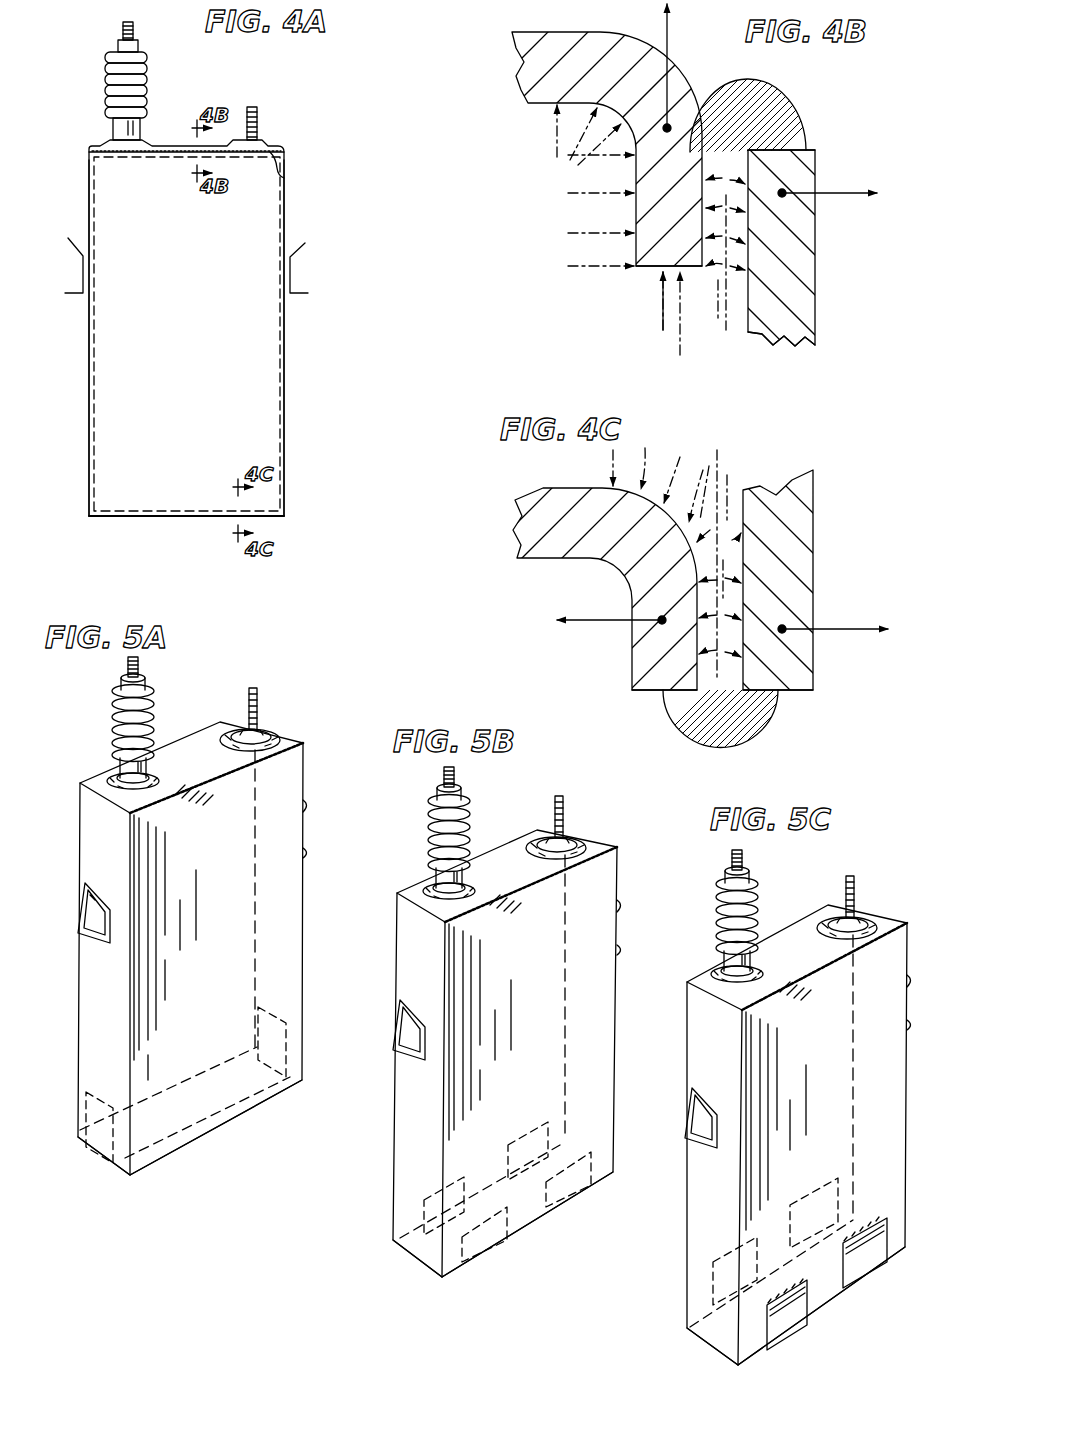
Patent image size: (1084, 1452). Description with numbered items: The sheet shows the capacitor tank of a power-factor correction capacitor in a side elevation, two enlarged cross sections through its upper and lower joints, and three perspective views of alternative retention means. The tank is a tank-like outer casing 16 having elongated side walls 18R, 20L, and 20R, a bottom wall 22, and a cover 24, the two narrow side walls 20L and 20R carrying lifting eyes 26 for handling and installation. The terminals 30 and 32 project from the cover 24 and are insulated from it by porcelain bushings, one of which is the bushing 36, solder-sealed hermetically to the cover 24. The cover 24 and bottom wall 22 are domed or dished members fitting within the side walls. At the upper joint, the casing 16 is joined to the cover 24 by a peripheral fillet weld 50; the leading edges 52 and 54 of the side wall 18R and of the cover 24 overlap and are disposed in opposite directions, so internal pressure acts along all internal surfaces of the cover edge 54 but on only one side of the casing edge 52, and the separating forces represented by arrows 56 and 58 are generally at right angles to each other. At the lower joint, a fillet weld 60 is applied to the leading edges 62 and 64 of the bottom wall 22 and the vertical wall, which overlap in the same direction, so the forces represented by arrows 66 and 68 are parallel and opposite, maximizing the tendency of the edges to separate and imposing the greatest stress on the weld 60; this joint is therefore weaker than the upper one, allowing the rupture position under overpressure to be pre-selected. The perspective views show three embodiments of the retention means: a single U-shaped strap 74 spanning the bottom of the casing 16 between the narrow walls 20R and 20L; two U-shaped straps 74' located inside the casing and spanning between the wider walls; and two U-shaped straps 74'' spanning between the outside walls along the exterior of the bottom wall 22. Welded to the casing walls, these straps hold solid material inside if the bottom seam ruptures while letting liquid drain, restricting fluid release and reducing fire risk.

In FIG. 4A, the outer casing 16 is at (272, 384).
In FIG. 4B, the outer casing 16 is at (781, 333).
In FIG. 4A, the side wall 18R is at (201, 297).
In FIG. 4B, the side wall 18R is at (805, 293).
In FIG. 4C, the side wall 18R is at (805, 560).
In FIG. 5A, the side wall 18R is at (236, 937).
In FIG. 5B, the side wall 18R is at (546, 1011).
In FIG. 5C, the side wall 18R is at (839, 1119).
In FIG. 4A, the side wall 20L is at (90, 468).
In FIG. 5A, the side wall 20L is at (122, 1032).
In FIG. 5B, the side wall 20L is at (435, 1131).
In FIG. 5C, the side wall 20L is at (712, 1173).
In FIG. 4A, the side wall 20R is at (282, 448).
In FIG. 4A, the bottom wall 22 is at (165, 520).
In FIG. 4C, the bottom wall 22 is at (546, 558).
In FIG. 5A, the bottom wall 22 is at (178, 1148).
In FIG. 5B, the bottom wall 22 is at (425, 1270).
In FIG. 5C, the bottom wall 22 is at (715, 1345).
In FIG. 4A, the cover 24 is at (275, 147).
In FIG. 4B, the cover 24 is at (534, 102).
In FIG. 5A, the cover 24 is at (203, 748).
In FIG. 5B, the cover 24 is at (510, 850).
In FIG. 5C, the cover 24 is at (795, 933).
In FIG. 4A, the lifting eyes 26 is at (68, 255).
In FIG. 5A, the lifting eyes 26 is at (85, 940).
In FIG. 5B, the lifting eyes 26 is at (398, 1040).
In FIG. 5C, the lifting eyes 26 is at (693, 1128).
In FIG. 4A, the terminal 30 is at (258, 110).
In FIG. 5A, the terminal 30 is at (260, 695).
In FIG. 5B, the terminal 30 is at (568, 800).
In FIG. 5C, the terminal 30 is at (855, 888).
In FIG. 4A, the terminal 32 is at (134, 26).
In FIG. 5A, the terminal 32 is at (143, 660).
In FIG. 5B, the terminal 32 is at (458, 770).
In FIG. 5C, the terminal 32 is at (748, 847).
In FIG. 4A, the bushing 36 is at (147, 78).
In FIG. 4A, the peripheral fillet weld 50 is at (284, 176).
In FIG. 4B, the peripheral fillet weld 50 is at (790, 100).
In FIG. 5A, the peripheral fillet weld 50 is at (296, 760).
In FIG. 5B, the peripheral fillet weld 50 is at (607, 855).
In FIG. 5C, the peripheral fillet weld 50 is at (710, 990).
In FIG. 4B, the leading edge 52 is at (812, 150).
In FIG. 4B, the leading edge 54 is at (650, 268).
In FIG. 4B, the arrow 56 is at (682, 66).
In FIG. 4B, the arrow 58 is at (828, 184).
In FIG. 4C, the fillet weld 60 is at (745, 735).
In FIG. 4C, the leading edge 62 is at (656, 690).
In FIG. 4C, the leading edge 64 is at (800, 692).
In FIG. 4C, the arrow 66 is at (834, 621).
In FIG. 4C, the arrow 68 is at (611, 609).
In FIG. 5A, the retention means 74 is at (197, 1085).
In FIG. 5B, the retention means 74' is at (521, 1204).
In FIG. 5C, the retention means 74'' is at (815, 1269).